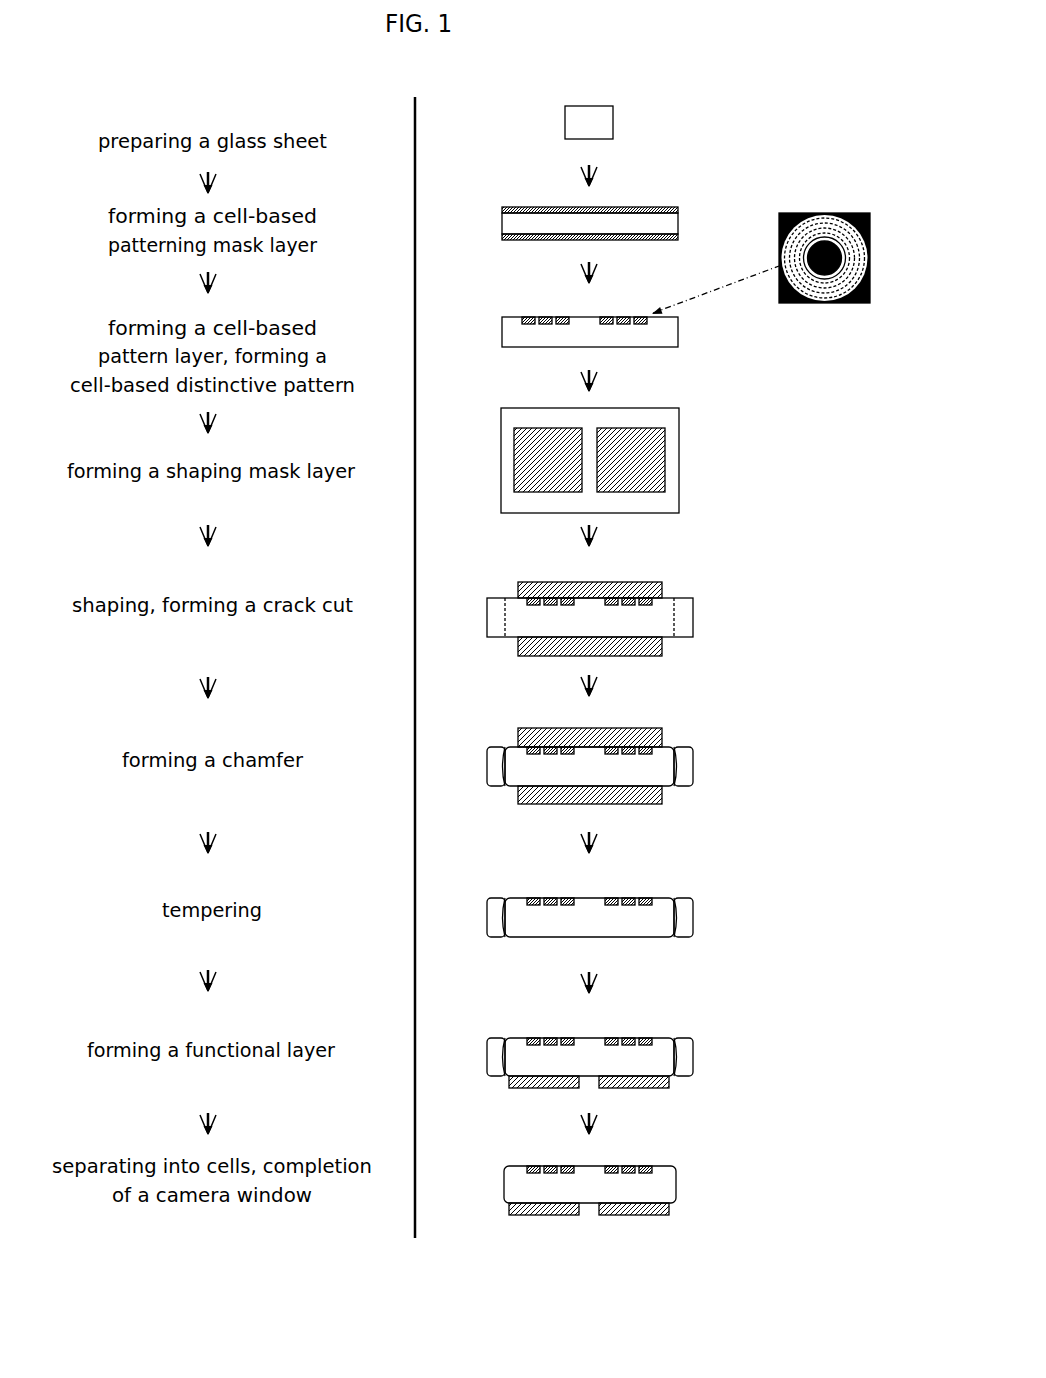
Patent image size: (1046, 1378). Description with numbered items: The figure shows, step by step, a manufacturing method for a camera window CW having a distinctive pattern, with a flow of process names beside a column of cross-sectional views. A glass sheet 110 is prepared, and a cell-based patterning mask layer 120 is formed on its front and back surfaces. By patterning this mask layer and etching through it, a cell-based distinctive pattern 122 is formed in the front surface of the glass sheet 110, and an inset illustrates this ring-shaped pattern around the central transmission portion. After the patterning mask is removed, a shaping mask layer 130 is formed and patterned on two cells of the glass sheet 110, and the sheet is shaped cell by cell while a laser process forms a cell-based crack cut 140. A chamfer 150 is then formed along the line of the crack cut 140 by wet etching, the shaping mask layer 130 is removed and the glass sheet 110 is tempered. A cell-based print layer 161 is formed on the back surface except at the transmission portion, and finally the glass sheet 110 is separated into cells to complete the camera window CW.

The glass sheet 110 is at (613, 122).
The patterning mask layer 120 is at (678, 210).
The distinctive pattern 122 is at (615, 317).
The shaping mask layer 130 is at (665, 440).
The crack cut 140 is at (693, 617).
The chamfer 150 is at (497, 788).
The print layer 161 is at (509, 1084).
The camera window CW is at (676, 1185).